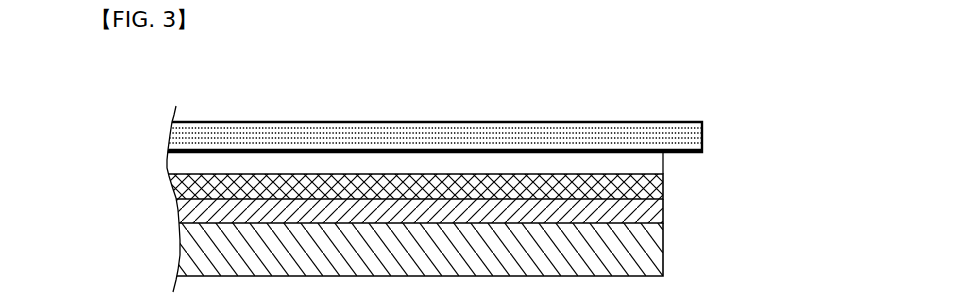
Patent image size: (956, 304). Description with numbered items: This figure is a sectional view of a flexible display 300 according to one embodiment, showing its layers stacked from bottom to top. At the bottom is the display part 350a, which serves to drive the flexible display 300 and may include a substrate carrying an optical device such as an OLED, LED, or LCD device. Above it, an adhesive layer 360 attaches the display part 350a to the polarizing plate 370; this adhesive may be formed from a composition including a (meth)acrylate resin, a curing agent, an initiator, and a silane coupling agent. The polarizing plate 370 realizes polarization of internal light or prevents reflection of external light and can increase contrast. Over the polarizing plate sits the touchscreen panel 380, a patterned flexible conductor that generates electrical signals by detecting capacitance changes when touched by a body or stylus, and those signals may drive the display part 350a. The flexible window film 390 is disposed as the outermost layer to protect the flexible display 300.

The flexible display 300 is at (618, 104).
The display part 350a is at (652, 247).
The adhesive layer 360 is at (655, 214).
The polarizing plate 370 is at (655, 192).
The touchscreen panel 380 is at (652, 163).
The flexible window film 390 is at (703, 137).